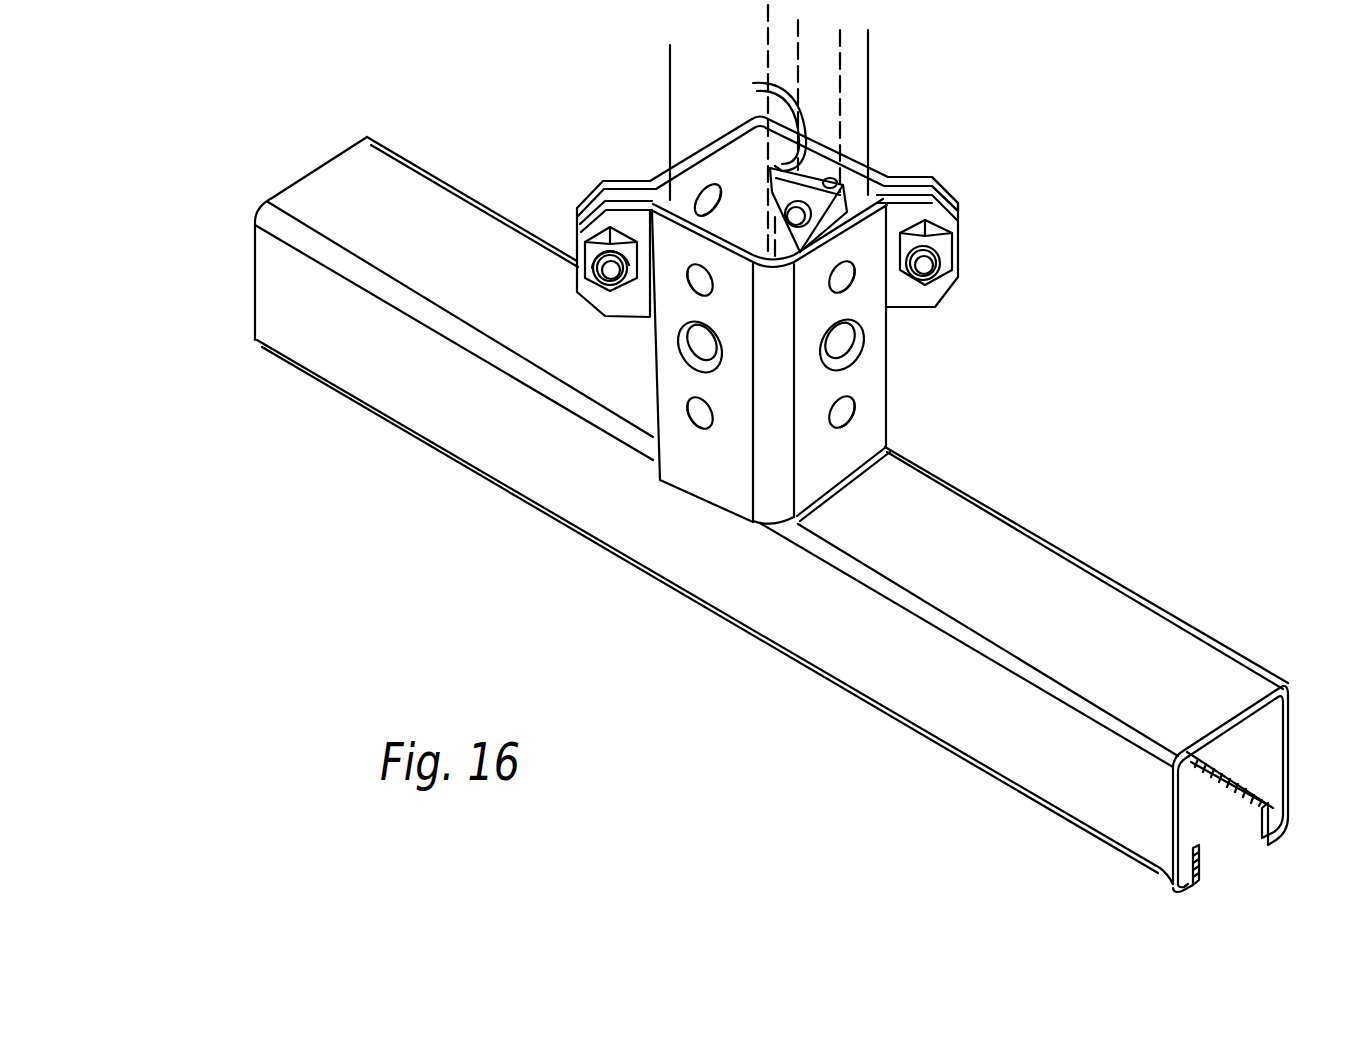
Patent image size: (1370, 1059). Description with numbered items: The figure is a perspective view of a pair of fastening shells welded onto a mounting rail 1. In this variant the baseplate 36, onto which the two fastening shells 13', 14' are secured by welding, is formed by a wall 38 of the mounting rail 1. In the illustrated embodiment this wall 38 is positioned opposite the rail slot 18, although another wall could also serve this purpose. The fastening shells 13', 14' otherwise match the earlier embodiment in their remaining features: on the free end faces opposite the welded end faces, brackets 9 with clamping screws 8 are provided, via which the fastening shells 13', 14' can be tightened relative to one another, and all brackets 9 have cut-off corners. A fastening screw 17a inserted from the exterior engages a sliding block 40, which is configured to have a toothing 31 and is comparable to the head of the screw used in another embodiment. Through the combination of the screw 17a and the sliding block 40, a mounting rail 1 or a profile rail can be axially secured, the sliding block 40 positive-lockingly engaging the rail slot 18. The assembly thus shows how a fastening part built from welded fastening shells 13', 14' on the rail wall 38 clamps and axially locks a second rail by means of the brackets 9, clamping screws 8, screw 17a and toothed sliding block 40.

The mounting rail 1 is at (668, 90).
The clamping screws 8 is at (930, 267).
The brackets 9 is at (962, 185).
The fastening shell 13' is at (823, 361).
The fastening shell 14' is at (767, 216).
The fastening screw 17a is at (866, 156).
The rail slot 18 is at (818, 84).
The toothing 31 is at (762, 83).
The baseplate 36 is at (910, 534).
The wall 38 is at (1126, 782).
The sliding block 40 is at (773, 207).